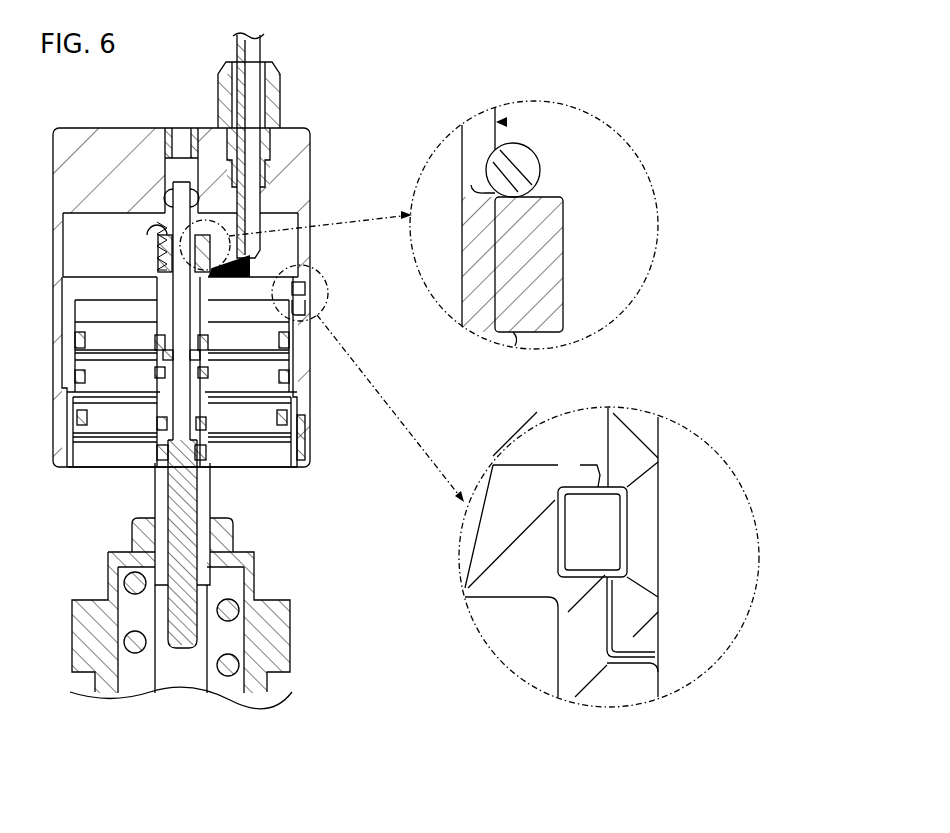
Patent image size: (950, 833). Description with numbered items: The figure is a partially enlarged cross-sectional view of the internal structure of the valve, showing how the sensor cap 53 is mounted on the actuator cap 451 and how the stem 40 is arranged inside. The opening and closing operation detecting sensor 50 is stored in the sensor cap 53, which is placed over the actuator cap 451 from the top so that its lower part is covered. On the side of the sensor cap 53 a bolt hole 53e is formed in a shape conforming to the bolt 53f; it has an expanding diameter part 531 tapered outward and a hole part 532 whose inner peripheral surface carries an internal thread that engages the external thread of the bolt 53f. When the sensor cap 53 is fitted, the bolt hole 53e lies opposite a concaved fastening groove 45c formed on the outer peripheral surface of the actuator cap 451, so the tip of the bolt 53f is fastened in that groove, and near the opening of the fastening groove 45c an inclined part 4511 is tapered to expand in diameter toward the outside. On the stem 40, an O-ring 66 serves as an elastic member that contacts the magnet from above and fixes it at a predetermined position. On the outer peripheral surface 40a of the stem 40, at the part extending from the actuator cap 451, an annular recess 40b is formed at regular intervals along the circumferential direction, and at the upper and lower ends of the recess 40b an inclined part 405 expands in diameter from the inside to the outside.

The sensor cap 53 is at (313, 152).
The actuator cap 451 is at (310, 427).
The stem 40 is at (553, 107).
The outer peripheral surface 40a is at (506, 122).
The annular recess 40b is at (471, 185).
The inclined part 405 is at (535, 157).
The O-ring 66 is at (540, 168).
The opening and closing operation detecting sensor 50 is at (563, 240).
The inclined part 4511 is at (592, 485).
The hole part 532 is at (558, 497).
The expanding diameter part 531 is at (658, 480).
The bolt 53f is at (658, 533).
The bolt hole 53e is at (660, 575).
The fastening groove 45c is at (565, 575).